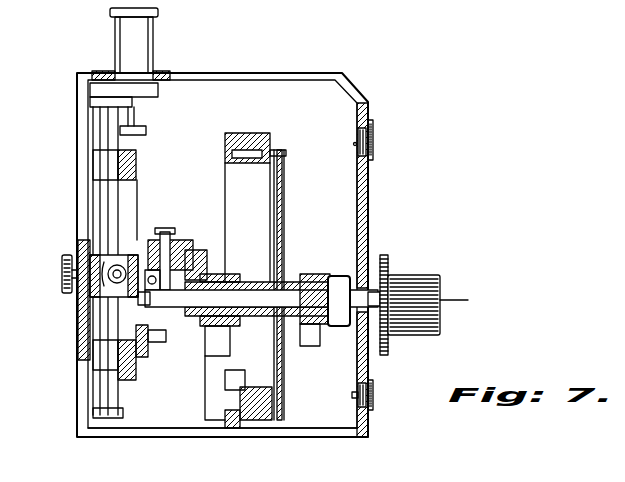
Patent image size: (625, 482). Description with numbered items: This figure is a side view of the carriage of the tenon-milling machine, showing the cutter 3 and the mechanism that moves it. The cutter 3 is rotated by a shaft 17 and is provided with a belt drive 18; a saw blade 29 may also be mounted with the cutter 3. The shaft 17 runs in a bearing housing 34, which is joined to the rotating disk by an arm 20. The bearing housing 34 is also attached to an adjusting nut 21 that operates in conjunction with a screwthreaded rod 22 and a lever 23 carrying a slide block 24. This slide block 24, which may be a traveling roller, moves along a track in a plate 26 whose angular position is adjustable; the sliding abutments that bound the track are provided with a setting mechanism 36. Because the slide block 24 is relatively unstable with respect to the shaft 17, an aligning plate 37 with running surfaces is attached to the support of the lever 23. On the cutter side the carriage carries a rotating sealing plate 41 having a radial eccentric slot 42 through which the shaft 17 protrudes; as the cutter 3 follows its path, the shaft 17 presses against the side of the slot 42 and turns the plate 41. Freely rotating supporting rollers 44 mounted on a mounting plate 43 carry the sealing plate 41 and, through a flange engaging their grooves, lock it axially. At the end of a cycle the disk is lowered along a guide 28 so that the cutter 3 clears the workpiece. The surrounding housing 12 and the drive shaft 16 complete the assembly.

The housing 12 is at (305, 74).
The guide 28 is at (100, 136).
The supporting rollers 44 is at (355, 145).
The rotating sealing plate 41 is at (366, 196).
The slide block 24 is at (122, 262).
The screwthreaded rod 22 is at (168, 246).
The lever 23 is at (205, 270).
The bearing housing 34 is at (258, 288).
The adjusting nut 21 is at (192, 297).
The shaft 17 is at (290, 288).
The belt drive 18 is at (339, 275).
The saw blade 29 is at (386, 258).
The cutter 3 is at (400, 286).
The setting mechanism 36 is at (78, 298).
The plate 26 is at (112, 311).
The drive shaft 16 is at (440, 304).
The arm 20 is at (212, 347).
The aligning plate 37 is at (139, 357).
The radial eccentric slot 42 is at (369, 362).
The mounting plate 43 is at (373, 396).